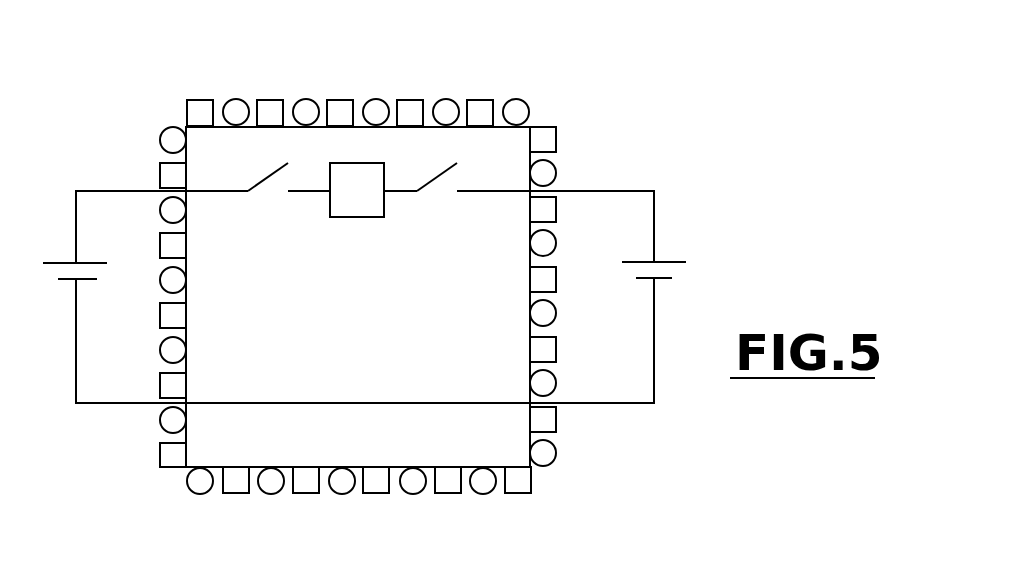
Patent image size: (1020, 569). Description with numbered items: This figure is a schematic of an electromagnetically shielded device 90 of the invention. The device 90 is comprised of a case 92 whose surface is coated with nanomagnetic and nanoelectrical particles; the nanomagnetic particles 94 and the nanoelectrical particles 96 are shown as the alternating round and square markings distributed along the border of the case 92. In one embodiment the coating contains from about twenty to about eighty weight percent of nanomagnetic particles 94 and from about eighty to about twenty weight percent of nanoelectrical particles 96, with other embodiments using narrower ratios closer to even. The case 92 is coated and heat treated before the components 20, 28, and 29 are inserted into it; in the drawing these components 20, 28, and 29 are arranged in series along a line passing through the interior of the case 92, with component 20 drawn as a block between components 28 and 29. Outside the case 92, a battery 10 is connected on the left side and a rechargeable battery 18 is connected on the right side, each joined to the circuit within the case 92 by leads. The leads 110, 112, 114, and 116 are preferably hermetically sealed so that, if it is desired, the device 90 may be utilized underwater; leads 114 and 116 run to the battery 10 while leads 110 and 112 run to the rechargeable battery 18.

The device 90 is at (418, 70).
The case 92 is at (499, 125).
The nanomagnetic particles 94 is at (485, 478).
The nanoelectrical particles 96 is at (363, 493).
The battery 10 is at (68, 262).
The rechargeable battery 18 is at (668, 250).
The component 20 is at (343, 208).
The component 28 is at (268, 177).
The component 29 is at (438, 177).
The lead 110 is at (603, 190).
The lead 112 is at (608, 403).
The lead 114 is at (125, 191).
The lead 116 is at (127, 403).